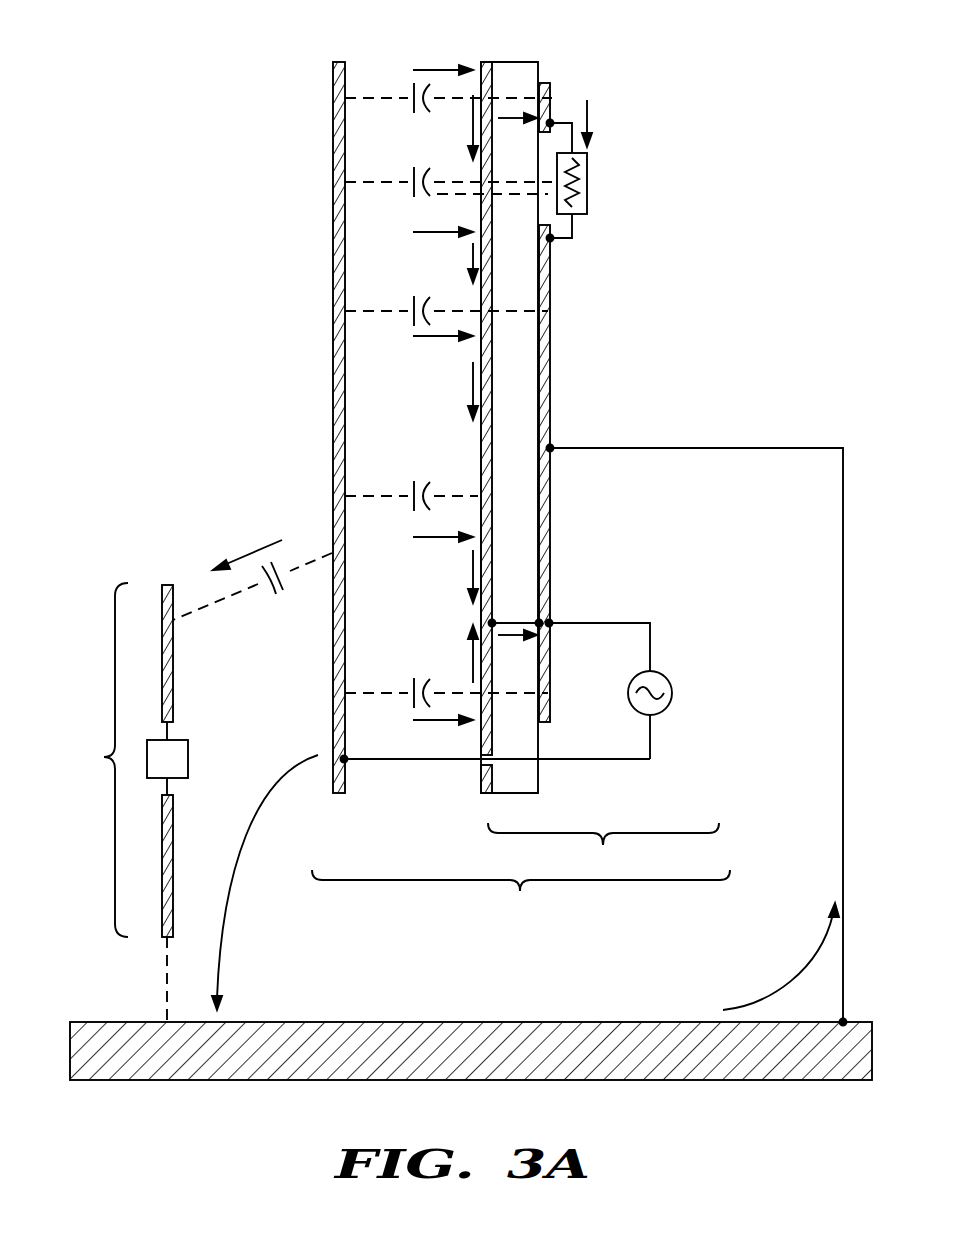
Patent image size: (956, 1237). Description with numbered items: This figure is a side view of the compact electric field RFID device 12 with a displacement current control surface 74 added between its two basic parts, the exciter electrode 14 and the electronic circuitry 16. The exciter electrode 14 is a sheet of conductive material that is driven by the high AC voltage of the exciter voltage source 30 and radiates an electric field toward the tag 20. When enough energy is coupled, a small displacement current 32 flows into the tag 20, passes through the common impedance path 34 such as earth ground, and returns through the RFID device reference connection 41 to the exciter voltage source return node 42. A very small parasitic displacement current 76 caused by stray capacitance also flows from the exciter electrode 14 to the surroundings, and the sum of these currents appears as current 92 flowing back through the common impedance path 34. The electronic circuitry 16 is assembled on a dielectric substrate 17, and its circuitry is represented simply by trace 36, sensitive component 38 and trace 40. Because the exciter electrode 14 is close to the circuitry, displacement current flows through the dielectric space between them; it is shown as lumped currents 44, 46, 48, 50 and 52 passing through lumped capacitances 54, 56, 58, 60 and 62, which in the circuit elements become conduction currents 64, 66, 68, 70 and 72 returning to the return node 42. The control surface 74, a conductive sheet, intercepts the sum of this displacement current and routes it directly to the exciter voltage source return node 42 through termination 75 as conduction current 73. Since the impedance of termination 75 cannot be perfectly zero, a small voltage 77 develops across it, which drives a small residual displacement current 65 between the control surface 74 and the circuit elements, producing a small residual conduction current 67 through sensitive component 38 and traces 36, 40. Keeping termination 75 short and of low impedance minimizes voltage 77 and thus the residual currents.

The RFID device 12 is at (521, 897).
The exciter electrode 14 is at (333, 81).
The electronic circuitry 16 is at (603, 850).
The substrate 17 is at (516, 62).
The tag 20 is at (132, 802).
The exciter voltage source 30 is at (673, 692).
The displacement current 32 is at (252, 575).
The common impedance path 34 is at (535, 1021).
The trace 36 is at (550, 90).
The sensitive component 38 is at (587, 157).
The trace 40 is at (552, 378).
The RFID device reference connection 41 is at (700, 448).
The exciter voltage source return node 42 is at (550, 623).
The lumped displacement current 44 is at (443, 60).
The lumped displacement current 46 is at (440, 221).
The lumped displacement current 48 is at (443, 347).
The lumped displacement current 50 is at (443, 527).
The lumped displacement current 52 is at (443, 731).
The lumped capacitance 54 is at (448, 108).
The lumped capacitance 56 is at (448, 177).
The lumped capacitance 58 is at (446, 305).
The lumped capacitance 60 is at (411, 491).
The lumped capacitance 62 is at (446, 688).
The conduction current 64 is at (460, 127).
The residual displacement current 65 is at (517, 131).
The conduction current 66 is at (460, 263).
The residual conduction current 67 is at (599, 123).
The conduction current 68 is at (460, 386).
The conduction current 70 is at (460, 573).
The conduction current 72 is at (460, 654).
The conduction current 73 is at (516, 648).
The displacement current control surface 74 is at (487, 62).
The termination 75 is at (518, 620).
The parasitic displacement current 76 is at (265, 882).
The voltage 77 is at (514, 545).
The return current 92 is at (781, 956).